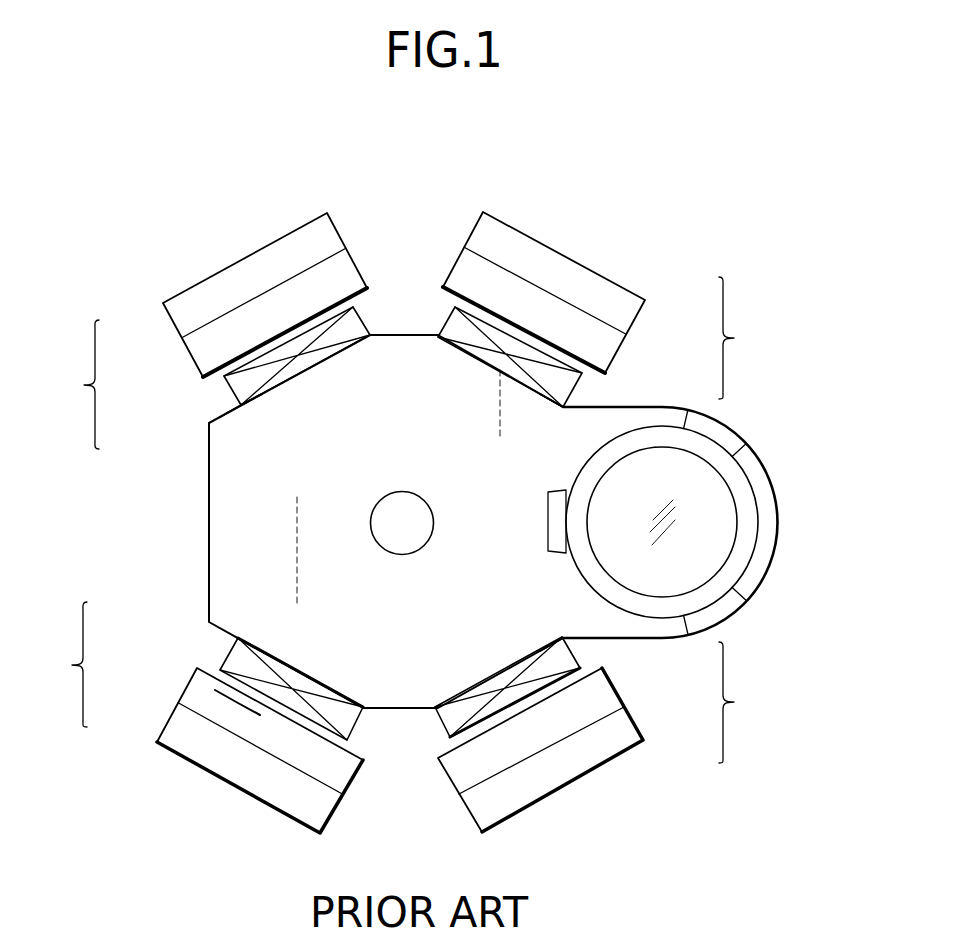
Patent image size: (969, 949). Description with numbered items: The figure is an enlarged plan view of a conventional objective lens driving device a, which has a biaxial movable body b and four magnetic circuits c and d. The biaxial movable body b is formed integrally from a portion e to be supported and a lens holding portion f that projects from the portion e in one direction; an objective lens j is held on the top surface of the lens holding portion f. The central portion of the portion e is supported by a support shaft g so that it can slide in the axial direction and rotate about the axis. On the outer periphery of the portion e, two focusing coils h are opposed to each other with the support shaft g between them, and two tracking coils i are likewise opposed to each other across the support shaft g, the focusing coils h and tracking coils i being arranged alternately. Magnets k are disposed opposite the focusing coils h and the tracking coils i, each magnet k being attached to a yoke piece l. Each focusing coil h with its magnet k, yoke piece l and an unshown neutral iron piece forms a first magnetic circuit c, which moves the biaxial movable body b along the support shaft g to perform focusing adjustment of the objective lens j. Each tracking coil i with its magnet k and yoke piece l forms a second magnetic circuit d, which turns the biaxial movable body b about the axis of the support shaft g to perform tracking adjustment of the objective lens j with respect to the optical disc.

The objective lens driving device a is at (605, 233).
The biaxial movable body b is at (209, 527).
The first magnetic circuit c is at (405, 502).
The second magnetic circuit d is at (405, 541).
The portion to be supported e is at (403, 345).
The lens holding portion f is at (782, 522).
The support shaft g is at (403, 543).
The focusing coil h is at (565, 406).
The tracking coil i is at (236, 397).
The objective lens j is at (722, 502).
The magnet k is at (188, 366).
The yoke piece l is at (175, 331).